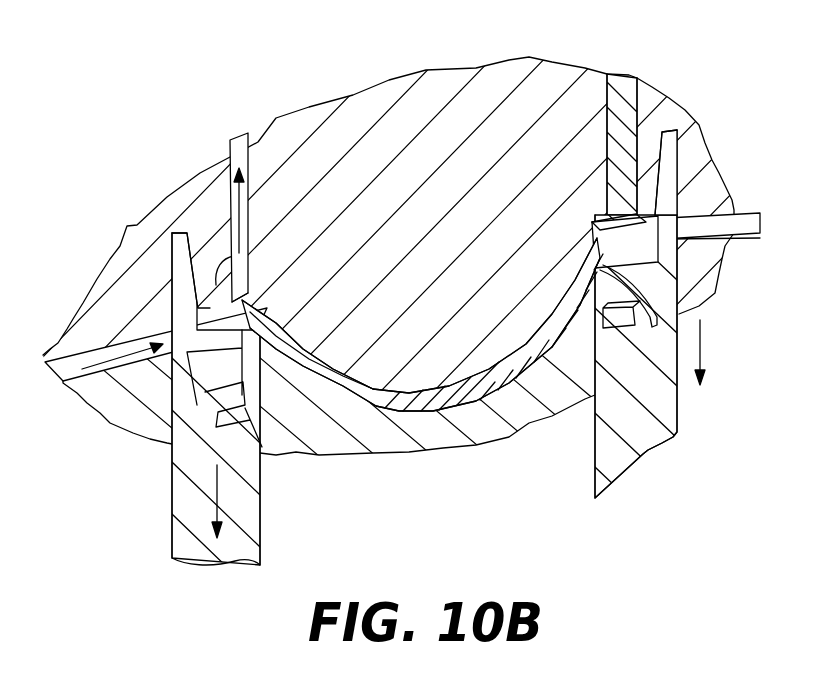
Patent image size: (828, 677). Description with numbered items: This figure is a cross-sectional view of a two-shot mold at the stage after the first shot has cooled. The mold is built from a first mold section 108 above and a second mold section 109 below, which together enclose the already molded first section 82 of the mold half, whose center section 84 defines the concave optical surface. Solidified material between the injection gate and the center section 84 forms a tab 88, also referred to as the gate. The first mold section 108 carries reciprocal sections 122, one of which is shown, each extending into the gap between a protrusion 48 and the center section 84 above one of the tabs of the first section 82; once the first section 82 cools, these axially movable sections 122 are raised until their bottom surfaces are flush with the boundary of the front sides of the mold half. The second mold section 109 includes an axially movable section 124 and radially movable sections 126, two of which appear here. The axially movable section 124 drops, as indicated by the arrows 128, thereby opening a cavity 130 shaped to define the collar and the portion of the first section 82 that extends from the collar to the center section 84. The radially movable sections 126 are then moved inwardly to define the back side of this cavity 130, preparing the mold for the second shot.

The first mold section 108 is at (388, 80).
The second mold section 109 is at (411, 453).
The reciprocal section 122 is at (236, 140).
The protrusion 48 is at (250, 256).
The cavity 130 is at (183, 314).
The radially movable section 126 is at (98, 374).
The axially movable section 124 is at (172, 478).
The arrows 128 is at (217, 490).
The tab 88 is at (600, 212).
The first section 82 is at (516, 376).
The center section 84 is at (373, 413).